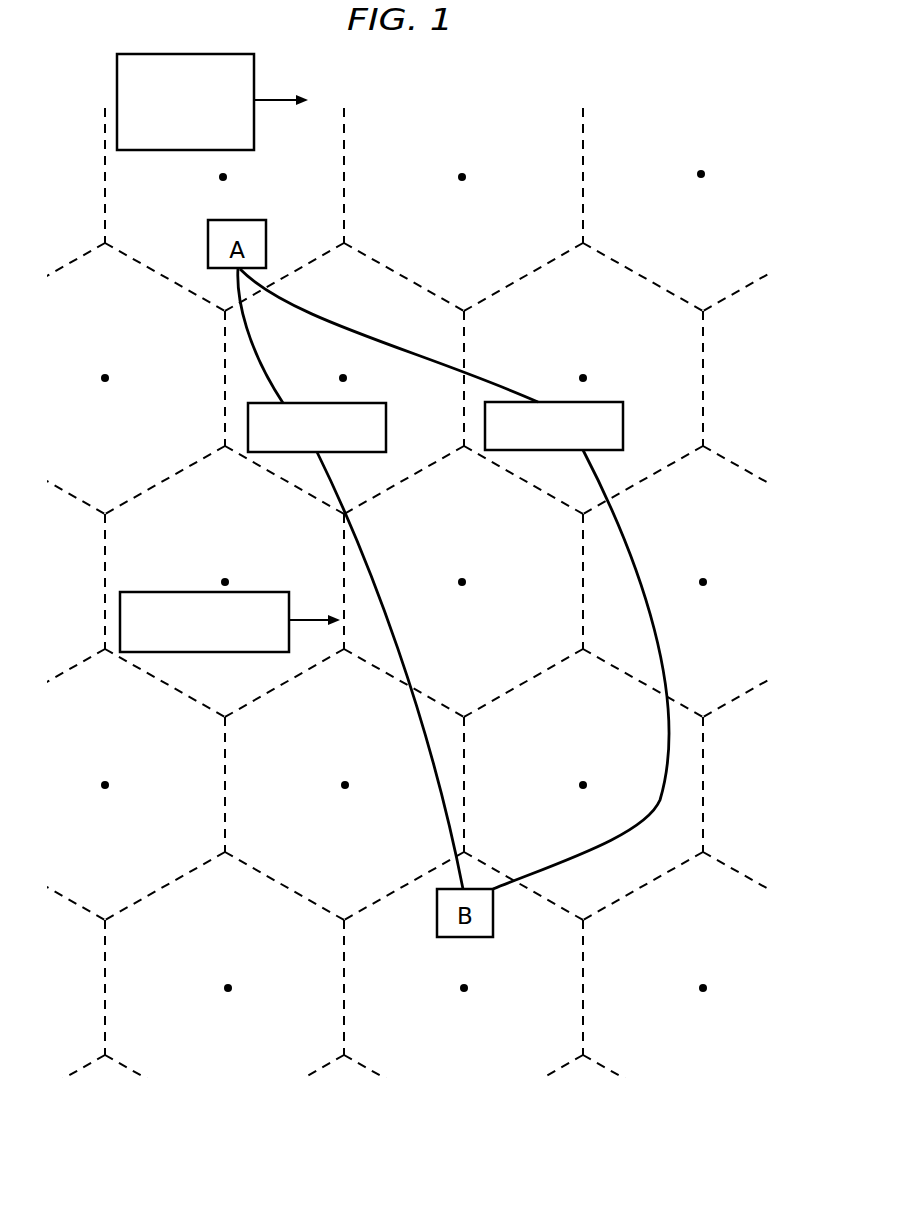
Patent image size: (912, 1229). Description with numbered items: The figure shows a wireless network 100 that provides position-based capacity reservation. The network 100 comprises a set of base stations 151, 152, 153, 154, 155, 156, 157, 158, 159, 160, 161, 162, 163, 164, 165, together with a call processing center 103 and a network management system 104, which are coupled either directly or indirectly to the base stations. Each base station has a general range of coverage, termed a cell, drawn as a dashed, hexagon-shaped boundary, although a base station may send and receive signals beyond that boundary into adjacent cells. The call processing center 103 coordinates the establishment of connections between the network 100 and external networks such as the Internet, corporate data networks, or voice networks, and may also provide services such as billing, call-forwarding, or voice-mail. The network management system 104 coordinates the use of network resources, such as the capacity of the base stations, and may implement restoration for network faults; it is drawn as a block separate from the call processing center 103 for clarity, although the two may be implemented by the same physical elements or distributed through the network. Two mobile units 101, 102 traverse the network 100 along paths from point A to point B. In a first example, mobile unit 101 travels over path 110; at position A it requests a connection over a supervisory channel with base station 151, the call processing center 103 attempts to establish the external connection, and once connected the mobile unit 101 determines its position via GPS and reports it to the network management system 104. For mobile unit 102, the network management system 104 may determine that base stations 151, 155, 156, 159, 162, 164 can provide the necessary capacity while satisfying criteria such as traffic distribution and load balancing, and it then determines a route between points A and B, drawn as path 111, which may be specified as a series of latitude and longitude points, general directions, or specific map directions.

The wireless network 100 is at (729, 110).
The mobile unit 101 is at (386, 425).
The mobile unit 102 is at (623, 427).
The call processing center 103 is at (145, 592).
The network management system 104 is at (145, 150).
The path 110 is at (268, 365).
The path 111 is at (353, 328).
The base station 151 is at (226, 175).
The base station 152 is at (465, 175).
The base station 153 is at (704, 172).
The base station 154 is at (108, 376).
The base station 155 is at (346, 376).
The base station 156 is at (586, 376).
The base station 157 is at (228, 580).
The base station 158 is at (465, 580).
The base station 159 is at (706, 580).
The base station 160 is at (108, 783).
The base station 161 is at (348, 783).
The base station 162 is at (586, 783).
The base station 163 is at (231, 986).
The base station 164 is at (467, 986).
The base station 165 is at (706, 986).